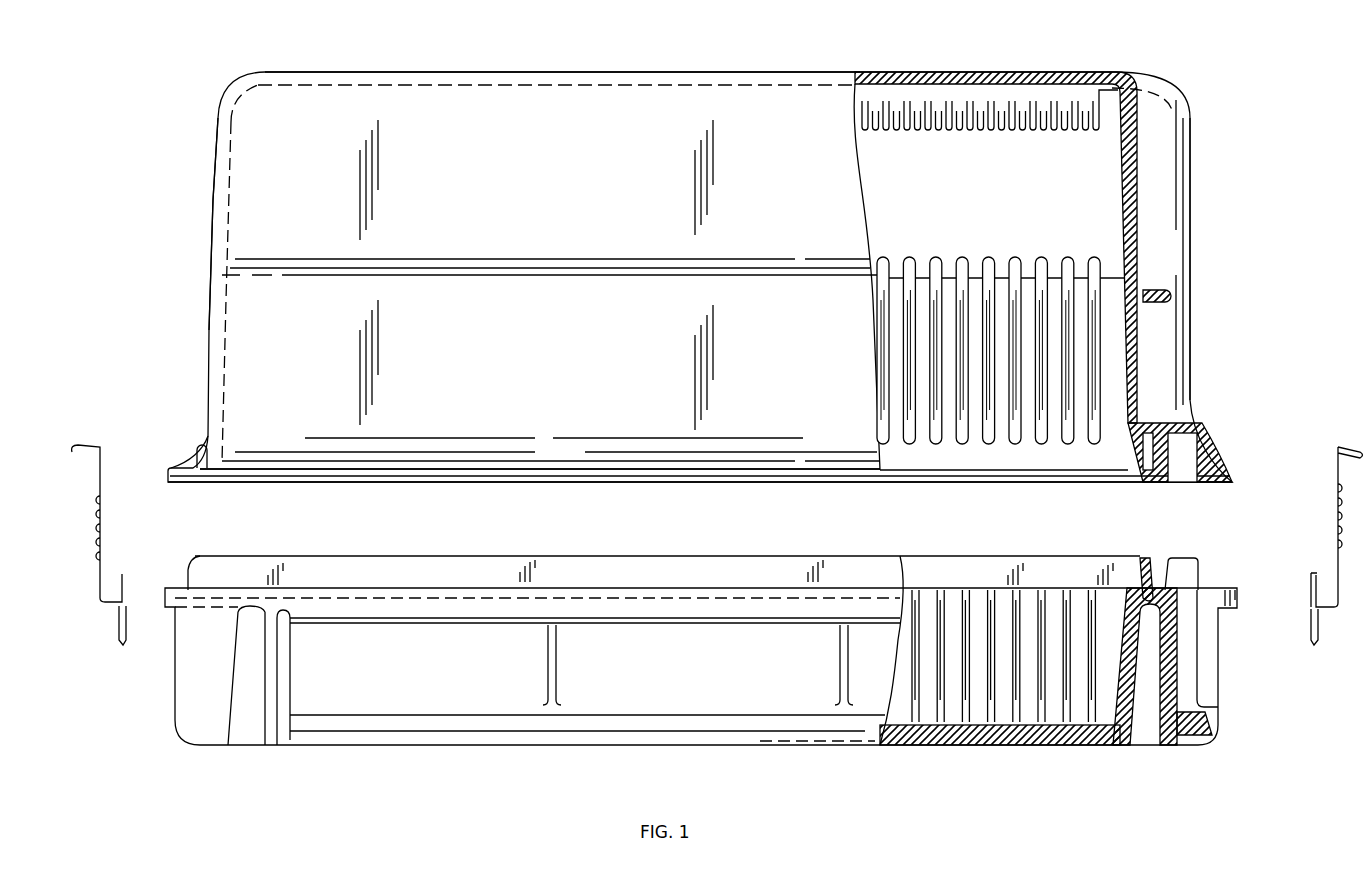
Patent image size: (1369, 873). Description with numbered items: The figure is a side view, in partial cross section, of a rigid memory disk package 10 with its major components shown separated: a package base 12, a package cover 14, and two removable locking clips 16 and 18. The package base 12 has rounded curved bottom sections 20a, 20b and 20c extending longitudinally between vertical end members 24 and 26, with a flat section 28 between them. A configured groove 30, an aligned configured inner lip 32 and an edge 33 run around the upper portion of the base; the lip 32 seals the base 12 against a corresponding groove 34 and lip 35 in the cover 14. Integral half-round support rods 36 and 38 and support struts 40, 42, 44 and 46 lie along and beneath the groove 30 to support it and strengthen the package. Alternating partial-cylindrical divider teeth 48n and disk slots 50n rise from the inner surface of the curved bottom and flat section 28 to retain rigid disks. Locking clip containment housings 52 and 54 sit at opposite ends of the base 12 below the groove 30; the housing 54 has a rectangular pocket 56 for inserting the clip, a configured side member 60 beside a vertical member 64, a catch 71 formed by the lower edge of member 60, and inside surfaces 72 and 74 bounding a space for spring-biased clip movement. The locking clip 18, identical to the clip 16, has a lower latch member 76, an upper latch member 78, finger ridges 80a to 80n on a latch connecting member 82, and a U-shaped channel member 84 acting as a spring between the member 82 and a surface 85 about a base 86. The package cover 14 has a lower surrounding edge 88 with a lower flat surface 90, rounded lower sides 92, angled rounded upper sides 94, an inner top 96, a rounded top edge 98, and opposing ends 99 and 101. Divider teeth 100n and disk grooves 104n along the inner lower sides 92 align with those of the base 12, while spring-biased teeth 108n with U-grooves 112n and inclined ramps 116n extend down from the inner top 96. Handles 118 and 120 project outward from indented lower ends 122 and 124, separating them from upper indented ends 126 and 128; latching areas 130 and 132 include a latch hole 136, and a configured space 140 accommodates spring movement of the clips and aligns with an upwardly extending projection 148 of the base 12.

The rigid memory disk package 10 is at (1262, 67).
The package base 12 is at (1240, 672).
The package cover 14 is at (1262, 326).
The removable locking clip 16 is at (175, 509).
The removable locking clip 18 is at (1312, 515).
The rounded curved bottom section 20a is at (432, 692).
The rounded curved bottom section 20b is at (698, 692).
The rounded curved bottom section 20c is at (883, 692).
The vertical end member 24 is at (280, 745).
The vertical end member 26 is at (1138, 738).
The flat section 28 is at (445, 748).
The configured groove 30 is at (188, 585).
The configured inner lip 32 is at (200, 556).
The edge 33 is at (170, 590).
The groove 34 is at (203, 476).
The lip 35 is at (218, 462).
The integral half round support rod 36 is at (663, 610).
The integral half round support rod 38 is at (718, 608).
The support strut 40 is at (556, 652).
The support strut 42 is at (840, 652).
The support strut 44 is at (556, 682).
The support strut 46 is at (840, 682).
The partial cylindrical shaped divider tooth 48n is at (1062, 735).
The disk groove or slot 50n is at (1104, 740).
The locking clip containment housing 52 is at (150, 690).
The locking clip containment housing 54 is at (1240, 653).
The rectangular hole or pocket 56 is at (1198, 622).
The configured side member 60 is at (1208, 713).
The vertical member 64 is at (1197, 592).
The catch 71 is at (1178, 725).
The inside surface 72 is at (1168, 640).
The inside surface 74 is at (1172, 685).
The lower latch member 76 is at (1316, 645).
The upper latch member 78 is at (1356, 447).
The finger ridge 80a is at (1338, 490).
The finger ridge 80n is at (1338, 552).
The latch connecting member 82 is at (1338, 585).
The U-shaped channel member 84 is at (1322, 585).
The surface 85 is at (1312, 596).
The base 86 is at (1320, 608).
The lower surrounding edge 88 is at (480, 483).
The lower flat surface 90 is at (612, 483).
The rounded configured lower side 92 is at (546, 377).
The angled rounded configured upper side 94 is at (548, 196).
The inner top 96 is at (818, 88).
The rounded top edge 98 is at (532, 72).
The opposing end 99 is at (215, 205).
The divider tooth 100n is at (1096, 254).
The opposing end 101 is at (1190, 267).
The disk groove 104n is at (1083, 268).
The spring biased tooth 108n is at (1090, 132).
The U groove 112n is at (1081, 134).
The inclined ramp 116n is at (1035, 98).
The handle 118 is at (232, 326).
The handle 120 is at (1172, 298).
The indented lower end 122 is at (258, 346).
The indented lower end 124 is at (1148, 392).
The upper indented end 126 is at (243, 167).
The upper indented end 128 is at (1140, 242).
The latching area 130 is at (170, 432).
The latching area 132 is at (1232, 437).
The latch hole 136 is at (1212, 459).
The configured space 140 is at (1182, 458).
The upwardly extending projection 148 is at (1180, 566).